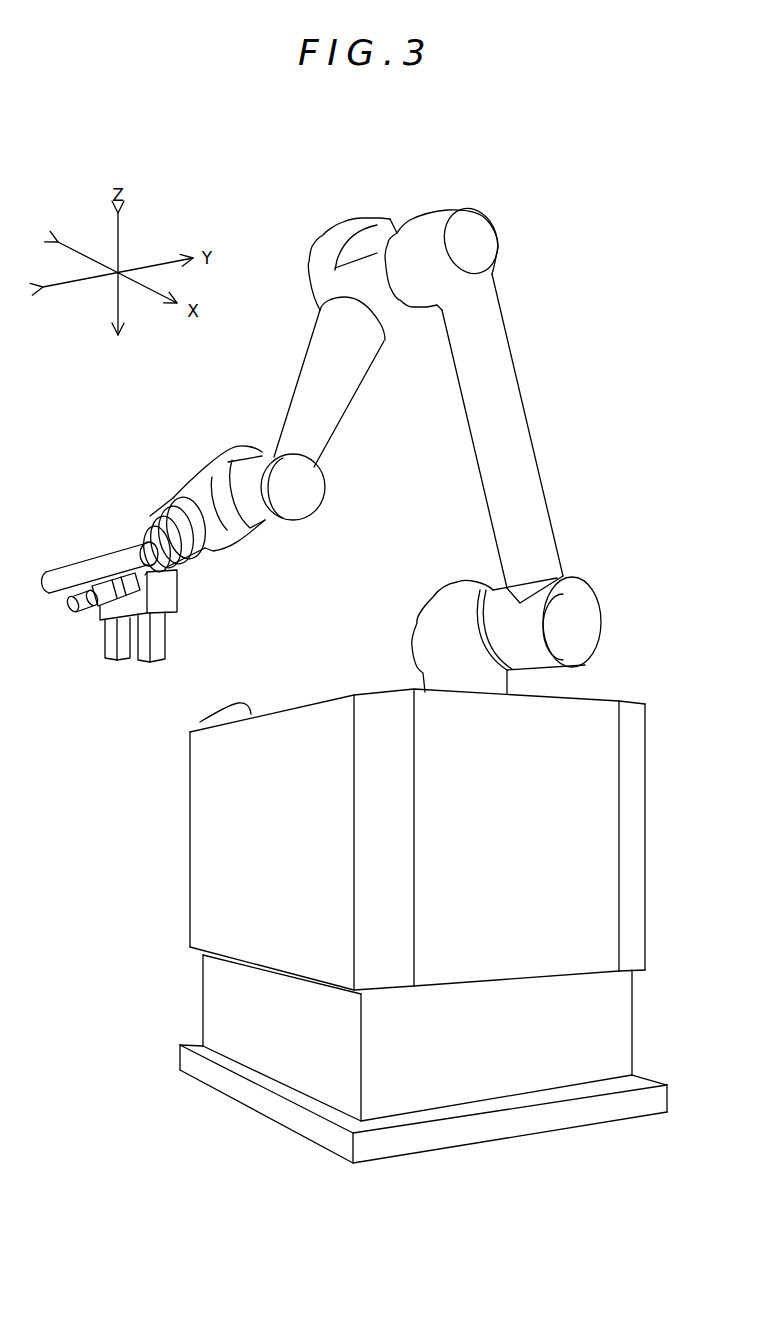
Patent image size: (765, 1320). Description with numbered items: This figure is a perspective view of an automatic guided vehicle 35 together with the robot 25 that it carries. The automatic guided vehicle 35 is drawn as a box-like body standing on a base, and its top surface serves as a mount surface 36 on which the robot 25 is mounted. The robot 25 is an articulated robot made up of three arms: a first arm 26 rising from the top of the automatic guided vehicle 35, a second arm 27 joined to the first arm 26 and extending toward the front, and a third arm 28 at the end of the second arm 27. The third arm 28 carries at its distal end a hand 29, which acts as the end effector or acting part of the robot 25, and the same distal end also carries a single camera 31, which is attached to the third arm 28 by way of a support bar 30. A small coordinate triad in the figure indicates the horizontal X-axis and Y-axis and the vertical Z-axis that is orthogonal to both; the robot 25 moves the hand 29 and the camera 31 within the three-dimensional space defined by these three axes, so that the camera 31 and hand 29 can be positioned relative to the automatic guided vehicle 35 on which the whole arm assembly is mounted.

The robot 25 is at (568, 378).
The first arm 26 is at (483, 456).
The second arm 27 is at (320, 358).
The third arm 28 is at (142, 536).
The hand 29 is at (172, 598).
The support bar 30 is at (78, 560).
The camera 31 is at (70, 610).
The automatic guided vehicle 35 is at (166, 918).
The mount surface 36 is at (200, 722).